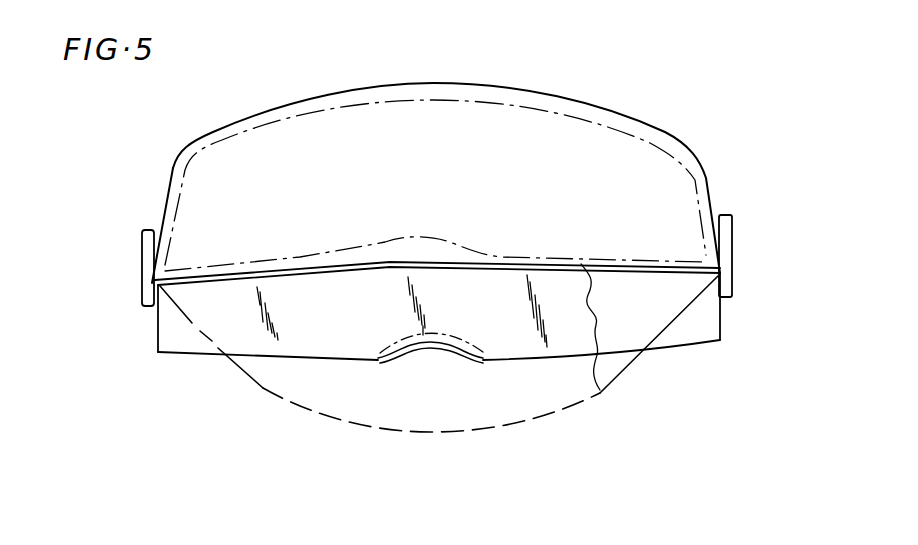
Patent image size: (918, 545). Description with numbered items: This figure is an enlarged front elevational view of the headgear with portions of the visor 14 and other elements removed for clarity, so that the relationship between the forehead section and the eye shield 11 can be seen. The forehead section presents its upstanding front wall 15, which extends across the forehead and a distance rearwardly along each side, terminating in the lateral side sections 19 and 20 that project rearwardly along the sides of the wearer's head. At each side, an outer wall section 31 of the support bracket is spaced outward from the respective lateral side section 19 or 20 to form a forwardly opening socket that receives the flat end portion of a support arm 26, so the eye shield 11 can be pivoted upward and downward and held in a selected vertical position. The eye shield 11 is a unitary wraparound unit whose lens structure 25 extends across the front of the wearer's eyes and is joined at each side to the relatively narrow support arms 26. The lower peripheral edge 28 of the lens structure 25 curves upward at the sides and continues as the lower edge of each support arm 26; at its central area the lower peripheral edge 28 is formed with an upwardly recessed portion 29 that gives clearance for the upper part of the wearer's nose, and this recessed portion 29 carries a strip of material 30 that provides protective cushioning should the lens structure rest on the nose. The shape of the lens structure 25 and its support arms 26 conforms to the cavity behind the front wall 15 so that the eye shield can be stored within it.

The eye shield 11 is at (213, 357).
The visor 14 is at (627, 362).
The front wall 15 is at (527, 118).
The lateral side section 19 is at (162, 211).
The lateral side section 20 is at (709, 182).
The lens structure 25 is at (332, 348).
The support arm 26 is at (159, 328).
The lower peripheral edge 28 is at (303, 357).
The upwardly recessed portion 29 is at (455, 350).
The strip of material 30 is at (428, 348).
The outer wall section 31 is at (142, 265).